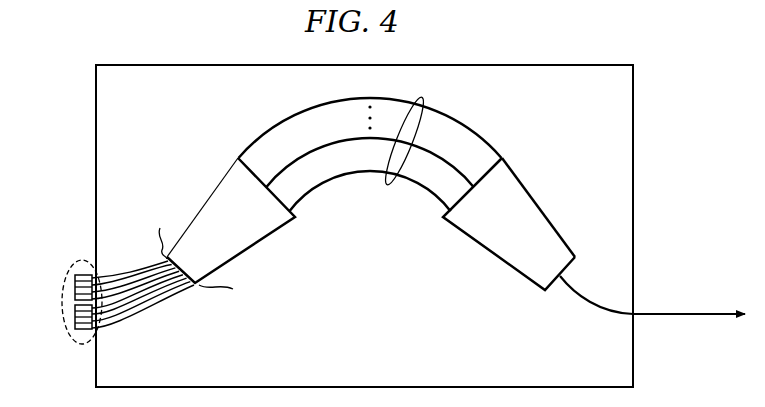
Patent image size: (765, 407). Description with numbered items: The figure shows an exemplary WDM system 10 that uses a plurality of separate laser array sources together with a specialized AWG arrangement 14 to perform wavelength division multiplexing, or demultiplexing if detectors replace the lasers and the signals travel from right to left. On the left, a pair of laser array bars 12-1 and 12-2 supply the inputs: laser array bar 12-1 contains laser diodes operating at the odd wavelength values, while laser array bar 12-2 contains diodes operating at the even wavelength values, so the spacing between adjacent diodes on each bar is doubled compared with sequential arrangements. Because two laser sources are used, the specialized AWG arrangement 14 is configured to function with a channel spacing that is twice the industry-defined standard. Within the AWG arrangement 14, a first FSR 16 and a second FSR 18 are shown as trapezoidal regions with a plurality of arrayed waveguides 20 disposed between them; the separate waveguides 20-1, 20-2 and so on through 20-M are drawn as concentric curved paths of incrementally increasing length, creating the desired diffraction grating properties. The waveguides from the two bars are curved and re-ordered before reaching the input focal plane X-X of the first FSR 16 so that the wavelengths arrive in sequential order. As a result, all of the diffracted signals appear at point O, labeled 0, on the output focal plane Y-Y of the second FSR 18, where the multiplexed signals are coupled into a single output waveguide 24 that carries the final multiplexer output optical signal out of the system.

The WDM system 10 is at (673, 60).
The laser array bar 12-1 is at (75, 283).
The laser array bar 12-2 is at (75, 313).
The specialized AWG arrangement 14 is at (512, 66).
The first FSR 16 is at (222, 181).
The second FSR 18 is at (516, 186).
The arrayed waveguides 20 is at (426, 100).
The waveguide 20-1 is at (313, 189).
The waveguide 20-2 is at (305, 156).
The waveguide 20-M is at (290, 118).
The output waveguide 24 is at (607, 312).
The point O 0 is at (552, 272).